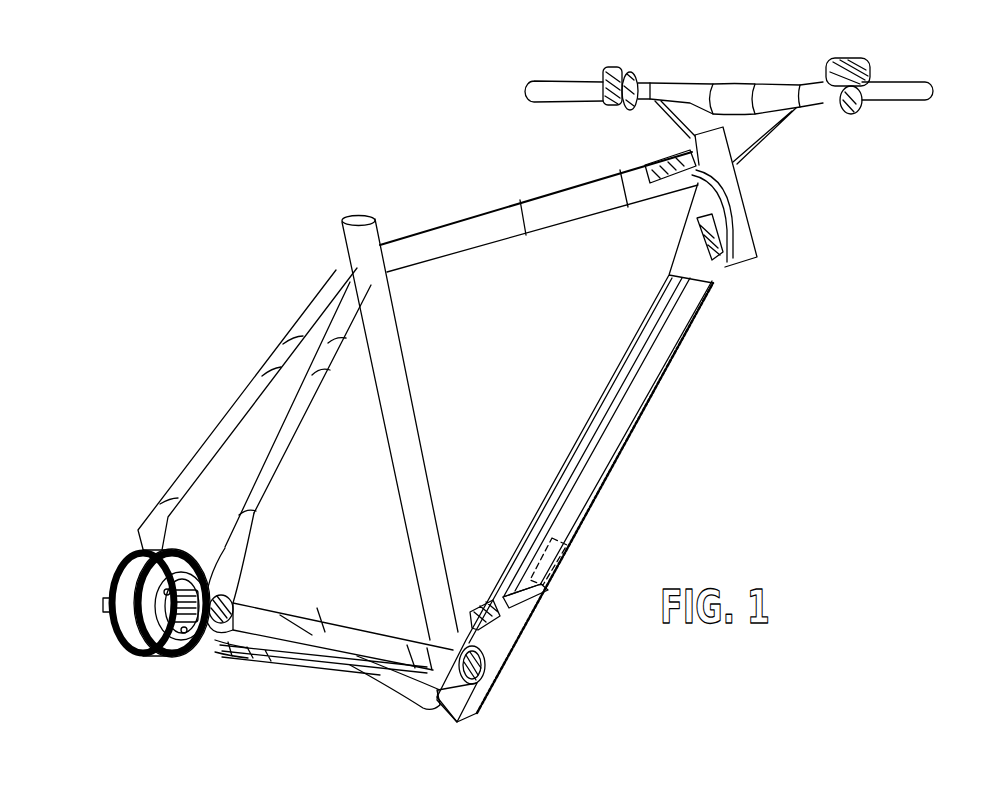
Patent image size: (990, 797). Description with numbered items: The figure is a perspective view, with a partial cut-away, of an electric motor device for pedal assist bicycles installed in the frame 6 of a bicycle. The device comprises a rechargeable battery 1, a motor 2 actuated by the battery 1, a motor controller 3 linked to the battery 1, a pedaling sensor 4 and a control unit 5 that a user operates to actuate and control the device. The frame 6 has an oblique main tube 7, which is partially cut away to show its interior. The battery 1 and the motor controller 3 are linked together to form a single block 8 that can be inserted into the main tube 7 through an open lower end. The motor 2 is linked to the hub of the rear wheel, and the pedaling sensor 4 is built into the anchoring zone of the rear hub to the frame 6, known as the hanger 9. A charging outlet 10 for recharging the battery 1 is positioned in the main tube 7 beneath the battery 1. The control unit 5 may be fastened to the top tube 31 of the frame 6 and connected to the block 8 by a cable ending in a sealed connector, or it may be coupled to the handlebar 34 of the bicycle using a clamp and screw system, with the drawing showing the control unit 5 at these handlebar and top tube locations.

The rechargeable battery 1 is at (529, 365).
The motor 2 is at (176, 622).
The motor controller 3 is at (562, 552).
The pedaling sensor 4 is at (222, 642).
The control unit 5 is at (606, 66).
The frame 6 is at (447, 424).
The oblique main tube 7 is at (499, 590).
The single block 8 is at (640, 388).
The hanger 9 is at (233, 598).
The charging outlet 10 is at (492, 622).
The top tube 31 is at (460, 232).
The handlebar 34 is at (893, 96).